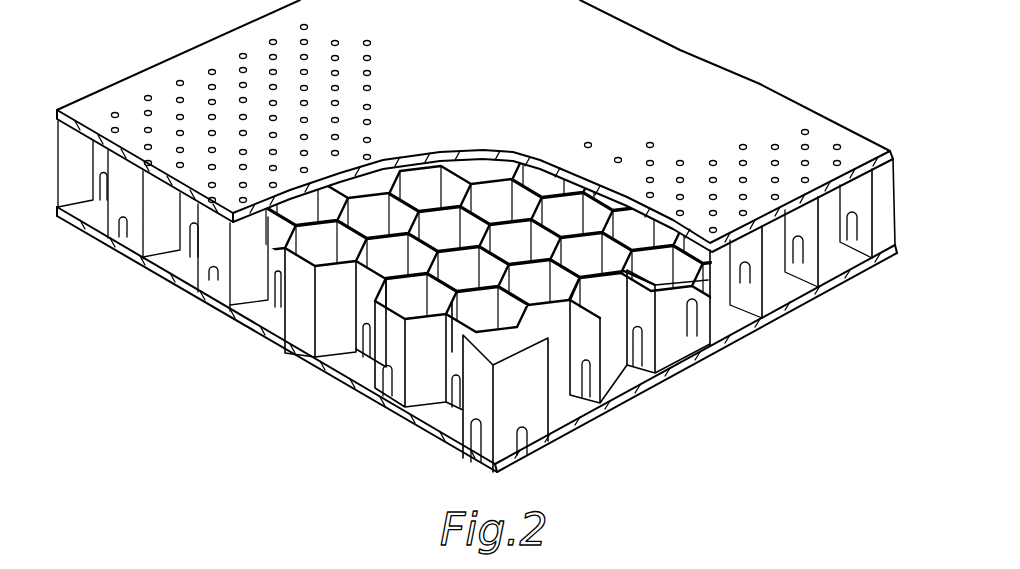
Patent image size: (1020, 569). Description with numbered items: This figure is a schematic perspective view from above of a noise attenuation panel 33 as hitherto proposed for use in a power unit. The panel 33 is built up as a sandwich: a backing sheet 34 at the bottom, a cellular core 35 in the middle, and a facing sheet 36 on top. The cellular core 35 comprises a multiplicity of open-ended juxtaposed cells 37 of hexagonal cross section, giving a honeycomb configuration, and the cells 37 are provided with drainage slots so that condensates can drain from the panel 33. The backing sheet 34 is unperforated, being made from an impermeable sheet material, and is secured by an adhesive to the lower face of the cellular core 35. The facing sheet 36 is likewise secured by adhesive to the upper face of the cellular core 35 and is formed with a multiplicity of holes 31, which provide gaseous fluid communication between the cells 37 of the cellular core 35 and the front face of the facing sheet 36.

The holes 31 is at (243, 55).
The noise attenuation panel 33 is at (498, 90).
The backing sheet 34 is at (737, 337).
The cellular core 35 is at (885, 175).
The facing sheet 36 is at (784, 128).
The cells 37 is at (433, 190).